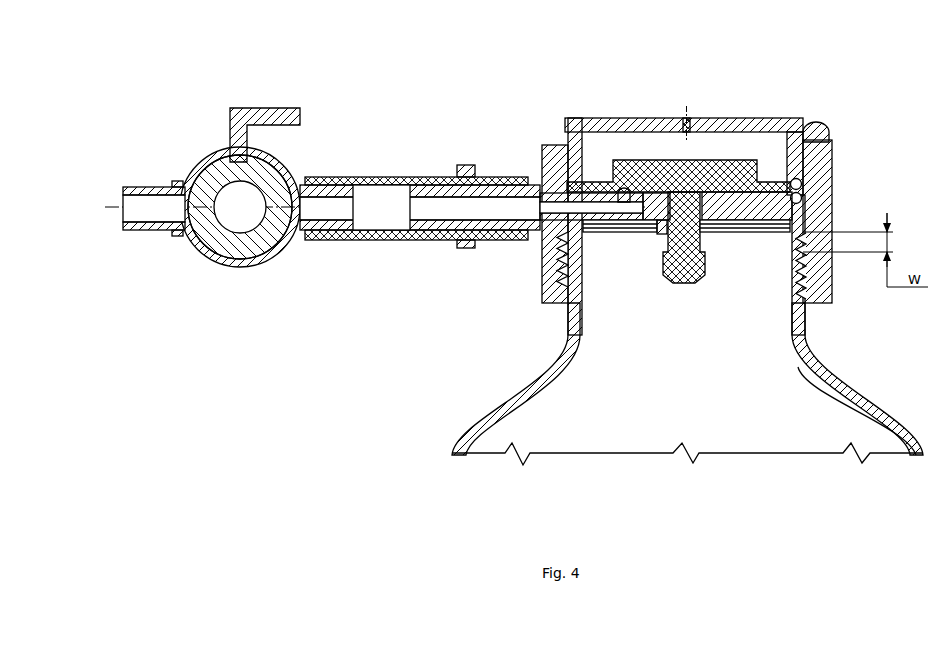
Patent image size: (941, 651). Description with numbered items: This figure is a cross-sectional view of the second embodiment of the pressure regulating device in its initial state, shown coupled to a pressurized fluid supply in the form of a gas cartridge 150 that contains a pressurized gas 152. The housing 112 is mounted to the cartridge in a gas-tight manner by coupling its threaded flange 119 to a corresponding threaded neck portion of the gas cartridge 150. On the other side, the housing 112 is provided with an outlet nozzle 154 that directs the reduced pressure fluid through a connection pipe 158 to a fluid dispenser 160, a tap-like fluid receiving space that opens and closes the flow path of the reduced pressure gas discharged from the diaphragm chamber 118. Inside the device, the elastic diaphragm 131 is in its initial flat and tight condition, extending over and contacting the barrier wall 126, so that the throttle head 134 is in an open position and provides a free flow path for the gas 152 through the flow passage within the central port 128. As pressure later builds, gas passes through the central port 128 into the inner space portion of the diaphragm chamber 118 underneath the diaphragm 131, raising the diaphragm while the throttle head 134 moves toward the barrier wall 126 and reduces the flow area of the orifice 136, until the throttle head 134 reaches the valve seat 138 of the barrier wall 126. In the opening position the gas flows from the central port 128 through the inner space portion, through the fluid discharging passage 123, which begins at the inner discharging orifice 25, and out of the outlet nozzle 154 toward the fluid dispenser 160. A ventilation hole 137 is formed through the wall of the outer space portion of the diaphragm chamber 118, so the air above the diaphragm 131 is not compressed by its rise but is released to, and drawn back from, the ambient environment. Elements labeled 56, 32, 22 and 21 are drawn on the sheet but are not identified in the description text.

The fluid dispenser 160 is at (196, 160).
The outlet nozzle 154 is at (418, 185).
The connection pipe 158 is at (353, 234).
The gap 56 is at (423, 216).
The fluid discharging passage 123 is at (540, 186).
The fitting body 32 is at (663, 235).
The inner discharging orifice 25 is at (564, 146).
The cap 22 is at (793, 127).
The cap lip 21 is at (827, 131).
The ventilation hole 137 is at (690, 120).
The diaphragm chamber 118 is at (777, 158).
The threaded flange 119 is at (823, 263).
The housing 112 is at (830, 210).
The diaphragm 131 is at (633, 158).
The throttle head 134 is at (687, 270).
The barrier wall 126 is at (777, 203).
The orifice 136 is at (657, 252).
The central port 128 is at (560, 228).
The valve seat 138 is at (713, 228).
The gas cartridge 150 is at (808, 360).
The gas 152 is at (785, 416).